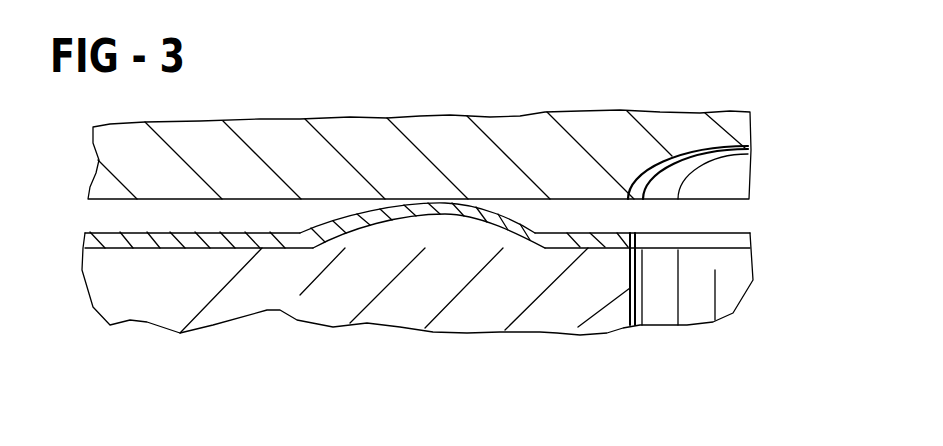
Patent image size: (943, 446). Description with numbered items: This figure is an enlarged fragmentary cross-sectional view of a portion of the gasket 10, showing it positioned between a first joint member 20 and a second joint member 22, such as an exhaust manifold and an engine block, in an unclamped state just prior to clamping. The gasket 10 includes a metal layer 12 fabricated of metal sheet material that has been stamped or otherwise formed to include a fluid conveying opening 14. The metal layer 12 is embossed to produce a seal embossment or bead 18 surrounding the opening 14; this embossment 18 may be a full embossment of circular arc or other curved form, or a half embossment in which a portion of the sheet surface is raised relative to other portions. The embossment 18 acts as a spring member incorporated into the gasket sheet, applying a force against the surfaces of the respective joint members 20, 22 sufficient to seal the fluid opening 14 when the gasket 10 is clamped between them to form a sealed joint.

The gasket 10 is at (768, 200).
The metal layer 12 is at (178, 233).
The fluid conveying opening 14 is at (688, 238).
The seal embossment 18 is at (483, 210).
The first joint member 20 is at (570, 158).
The second joint member 22 is at (575, 306).